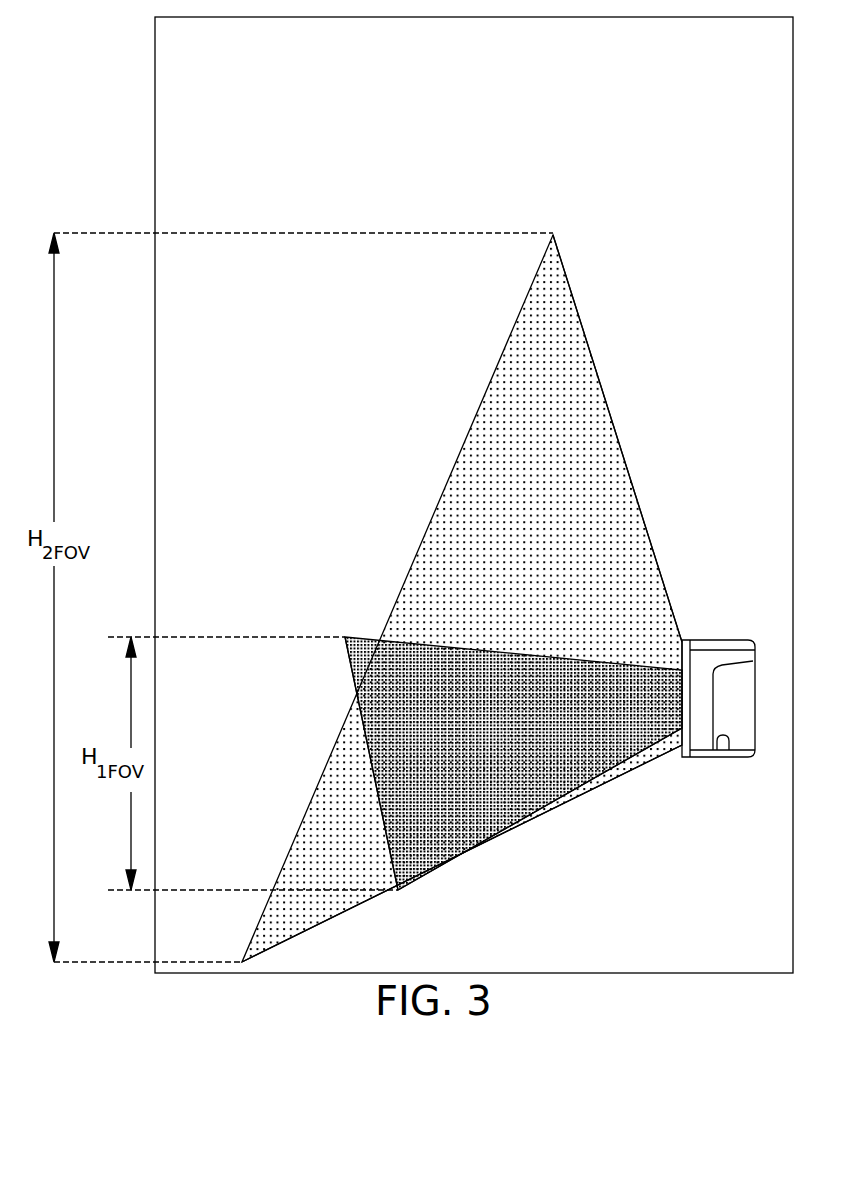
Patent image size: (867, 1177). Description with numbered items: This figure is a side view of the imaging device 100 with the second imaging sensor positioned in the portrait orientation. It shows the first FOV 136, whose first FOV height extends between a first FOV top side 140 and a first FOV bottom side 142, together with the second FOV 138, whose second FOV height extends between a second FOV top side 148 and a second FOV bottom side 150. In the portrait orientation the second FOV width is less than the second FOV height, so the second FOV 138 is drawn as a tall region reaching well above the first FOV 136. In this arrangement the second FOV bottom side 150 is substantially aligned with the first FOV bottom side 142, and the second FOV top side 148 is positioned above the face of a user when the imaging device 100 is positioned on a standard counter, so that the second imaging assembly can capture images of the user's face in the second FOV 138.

The imaging device 100 is at (782, 657).
The first FOV 136 is at (355, 637).
The second FOV 138 is at (620, 520).
The first FOV top side 140 is at (567, 658).
The first FOV bottom side 142 is at (555, 237).
The second FOV top side 148 is at (580, 318).
The second FOV bottom side 150 is at (297, 932).